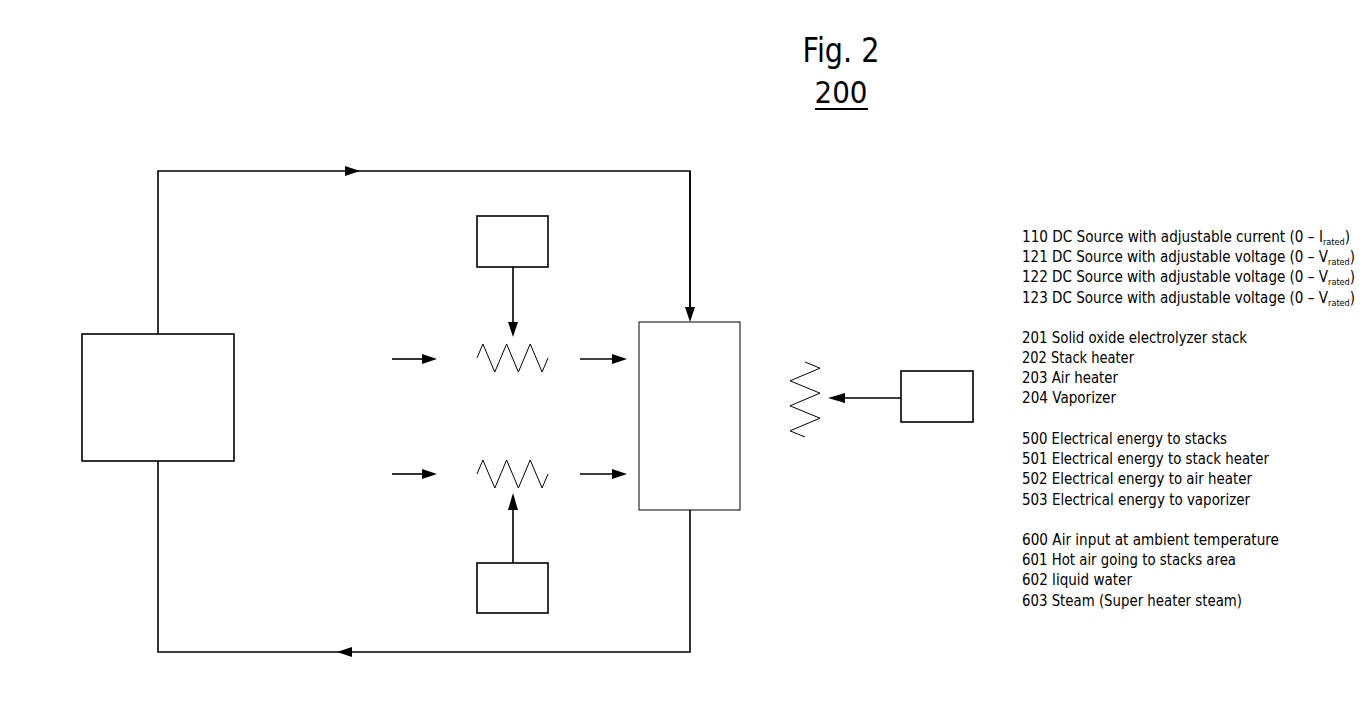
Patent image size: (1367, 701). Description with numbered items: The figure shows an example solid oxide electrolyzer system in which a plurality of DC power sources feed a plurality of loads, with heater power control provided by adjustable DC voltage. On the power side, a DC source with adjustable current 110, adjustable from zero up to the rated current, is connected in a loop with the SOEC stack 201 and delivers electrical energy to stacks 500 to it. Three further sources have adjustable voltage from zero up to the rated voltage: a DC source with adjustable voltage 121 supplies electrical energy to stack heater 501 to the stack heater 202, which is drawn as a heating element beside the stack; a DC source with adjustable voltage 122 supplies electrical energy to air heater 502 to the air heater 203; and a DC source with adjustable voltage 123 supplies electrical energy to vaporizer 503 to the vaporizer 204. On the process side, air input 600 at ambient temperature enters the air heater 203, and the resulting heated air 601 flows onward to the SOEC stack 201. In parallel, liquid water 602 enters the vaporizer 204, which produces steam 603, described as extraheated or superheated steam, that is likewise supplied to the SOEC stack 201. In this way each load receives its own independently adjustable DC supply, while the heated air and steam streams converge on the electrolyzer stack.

The DC source with adjustable current 110 is at (158, 387).
The DC source with adjustable voltage 121 is at (940, 387).
The DC source with adjustable voltage 122 is at (527, 237).
The DC source with adjustable voltage 123 is at (524, 596).
The SOEC stack 201 is at (697, 405).
The stack heater 202 is at (819, 407).
The air heater 203 is at (512, 370).
The vaporizer 204 is at (512, 464).
The electrical energy to stacks 500 is at (673, 246).
The electrical energy to stack heater 501 is at (864, 407).
The electrical energy to air heater 502 is at (531, 302).
The electrical energy to vaporizer 503 is at (528, 528).
The air input 600 is at (414, 368).
The heated air 601 is at (603, 368).
The liquid water 602 is at (414, 483).
The steam 603 is at (603, 483).